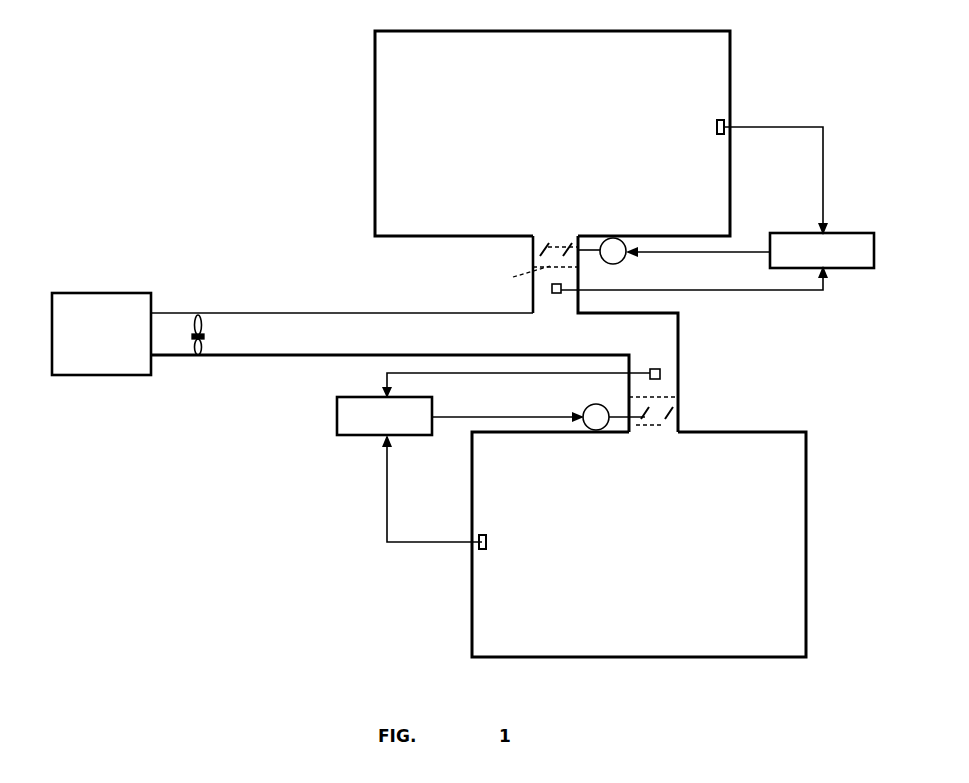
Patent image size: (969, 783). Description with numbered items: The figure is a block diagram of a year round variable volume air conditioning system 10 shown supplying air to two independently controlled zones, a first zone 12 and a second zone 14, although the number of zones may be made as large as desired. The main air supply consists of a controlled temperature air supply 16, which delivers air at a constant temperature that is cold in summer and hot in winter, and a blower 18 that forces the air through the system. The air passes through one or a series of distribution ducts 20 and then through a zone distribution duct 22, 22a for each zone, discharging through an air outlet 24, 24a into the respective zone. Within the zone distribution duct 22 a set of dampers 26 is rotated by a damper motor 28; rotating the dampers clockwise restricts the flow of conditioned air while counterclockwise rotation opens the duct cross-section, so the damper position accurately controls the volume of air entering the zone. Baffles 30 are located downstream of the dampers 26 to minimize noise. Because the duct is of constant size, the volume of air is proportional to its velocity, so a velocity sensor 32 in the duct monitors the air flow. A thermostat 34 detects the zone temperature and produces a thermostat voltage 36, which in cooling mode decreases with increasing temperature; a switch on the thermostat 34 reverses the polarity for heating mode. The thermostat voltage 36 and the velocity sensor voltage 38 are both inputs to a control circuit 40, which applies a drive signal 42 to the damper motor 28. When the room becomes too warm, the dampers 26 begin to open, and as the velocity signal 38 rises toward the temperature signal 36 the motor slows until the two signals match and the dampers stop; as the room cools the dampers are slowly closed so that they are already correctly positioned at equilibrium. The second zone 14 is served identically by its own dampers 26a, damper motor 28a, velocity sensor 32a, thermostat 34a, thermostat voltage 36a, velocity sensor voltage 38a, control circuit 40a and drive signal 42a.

The air conditioning system 10 is at (219, 178).
The first zone 12 is at (559, 133).
The second zone 14 is at (655, 573).
The controlled temperature air supply 16 is at (107, 342).
The blower 18 is at (207, 323).
The distribution duct 20 is at (292, 315).
The zone distribution duct 22 is at (530, 300).
The zone distribution duct 22a is at (680, 356).
The air outlet 24 is at (546, 240).
The air outlet 24a is at (629, 433).
The dampers 26 is at (565, 231).
The dampers 26a is at (666, 432).
The damper motor 28 is at (625, 258).
The damper motor 28a is at (596, 403).
The baffles 30 is at (532, 275).
The velocity sensor 32 is at (556, 293).
The velocity sensor 32a is at (655, 368).
The thermostat 34 is at (716, 127).
The thermostat 34a is at (487, 545).
The thermostat voltage 36 is at (823, 187).
The thermostat voltage 36a is at (384, 518).
The velocity sensor voltage 38 is at (742, 290).
The velocity sensor voltage 38a is at (541, 374).
The control circuit 40 is at (832, 262).
The control circuit 40a is at (399, 426).
The drive signal 42 is at (730, 252).
The drive signal 42a is at (506, 416).